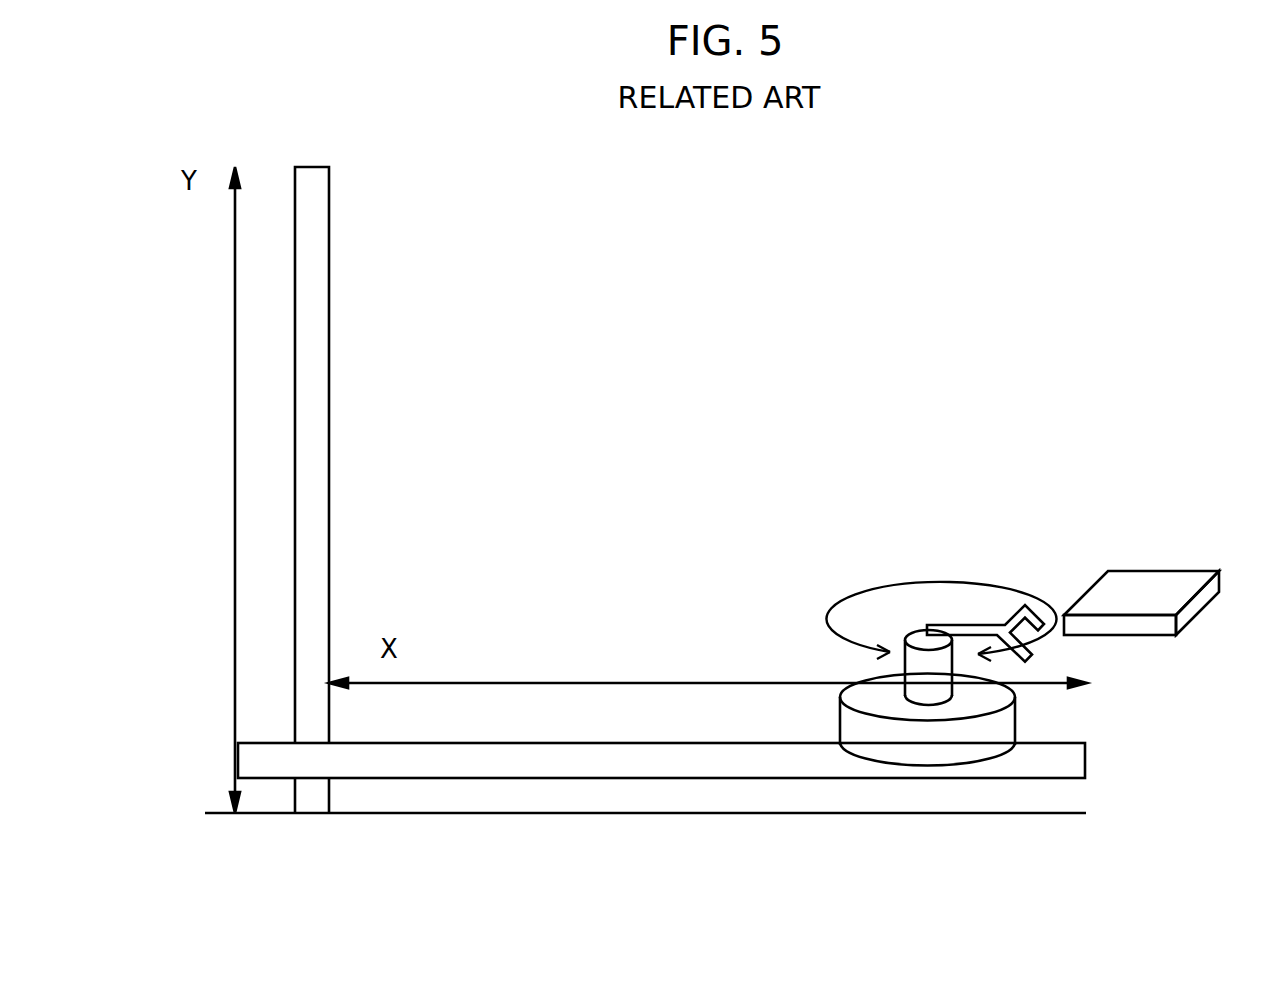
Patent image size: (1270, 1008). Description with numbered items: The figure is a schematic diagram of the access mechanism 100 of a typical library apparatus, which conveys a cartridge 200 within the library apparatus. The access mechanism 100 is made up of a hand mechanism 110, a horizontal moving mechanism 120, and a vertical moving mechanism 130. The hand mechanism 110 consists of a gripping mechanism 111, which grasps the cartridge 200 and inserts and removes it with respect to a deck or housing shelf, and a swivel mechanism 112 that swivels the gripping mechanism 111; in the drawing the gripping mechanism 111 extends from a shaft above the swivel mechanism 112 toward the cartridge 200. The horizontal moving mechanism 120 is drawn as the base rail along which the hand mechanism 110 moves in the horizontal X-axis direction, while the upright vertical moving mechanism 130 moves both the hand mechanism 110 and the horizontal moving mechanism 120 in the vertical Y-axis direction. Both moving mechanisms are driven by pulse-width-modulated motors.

The access mechanism 100 is at (647, 372).
The hand mechanism 110 is at (928, 619).
The gripping mechanism 111 is at (1030, 606).
The swivel mechanism 112 is at (870, 693).
The horizontal moving mechanism 120 is at (435, 780).
The vertical moving mechanism 130 is at (318, 362).
The cartridge 200 is at (1163, 571).